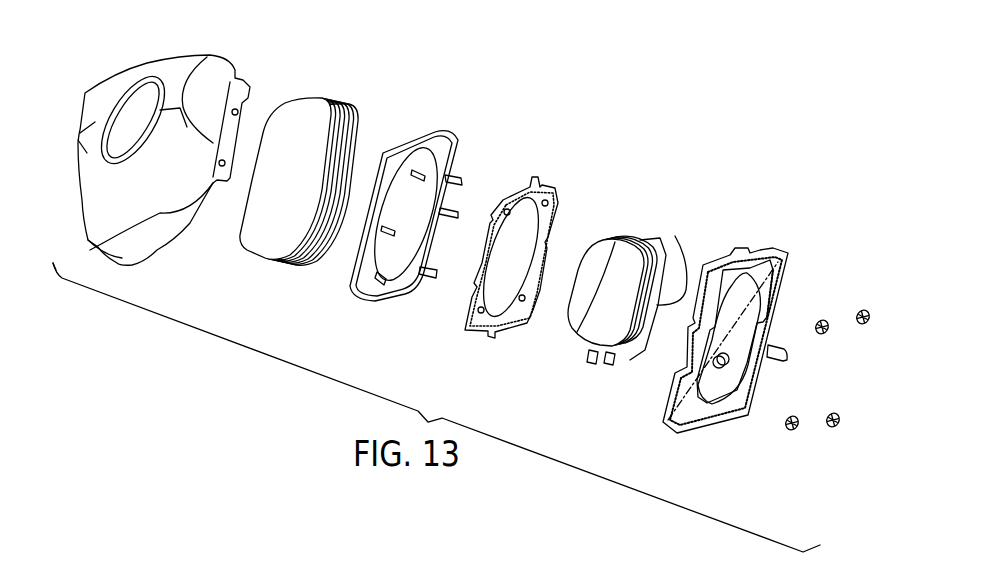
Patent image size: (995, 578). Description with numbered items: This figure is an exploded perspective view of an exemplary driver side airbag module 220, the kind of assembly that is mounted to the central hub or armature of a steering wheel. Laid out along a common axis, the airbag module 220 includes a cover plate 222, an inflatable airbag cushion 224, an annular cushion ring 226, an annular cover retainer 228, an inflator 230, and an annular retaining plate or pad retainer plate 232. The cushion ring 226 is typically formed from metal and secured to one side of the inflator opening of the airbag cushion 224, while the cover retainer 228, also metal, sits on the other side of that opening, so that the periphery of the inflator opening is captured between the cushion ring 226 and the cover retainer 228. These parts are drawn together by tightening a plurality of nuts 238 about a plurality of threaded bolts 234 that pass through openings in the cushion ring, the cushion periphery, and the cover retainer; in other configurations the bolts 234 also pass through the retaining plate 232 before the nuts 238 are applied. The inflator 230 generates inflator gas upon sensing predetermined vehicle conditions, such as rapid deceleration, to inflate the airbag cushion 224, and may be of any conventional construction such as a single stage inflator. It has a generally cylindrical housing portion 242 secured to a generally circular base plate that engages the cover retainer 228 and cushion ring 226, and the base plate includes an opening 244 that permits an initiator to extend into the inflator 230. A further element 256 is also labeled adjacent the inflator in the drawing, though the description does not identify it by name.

The driver side airbag module 220 is at (600, 122).
The cover plate 222 is at (194, 58).
The inflatable airbag cushion 224 is at (306, 95).
The annular cushion ring 226 is at (400, 148).
The annular cover retainer 228 is at (533, 178).
The inflator 230 is at (620, 241).
The annular retaining plate or pad retainer plate 232 is at (727, 258).
The threaded bolts 234 is at (455, 178).
The nuts 238 is at (822, 320).
The housing portion 242 is at (595, 338).
The opening 244 is at (680, 262).
The tab 256 is at (605, 362).